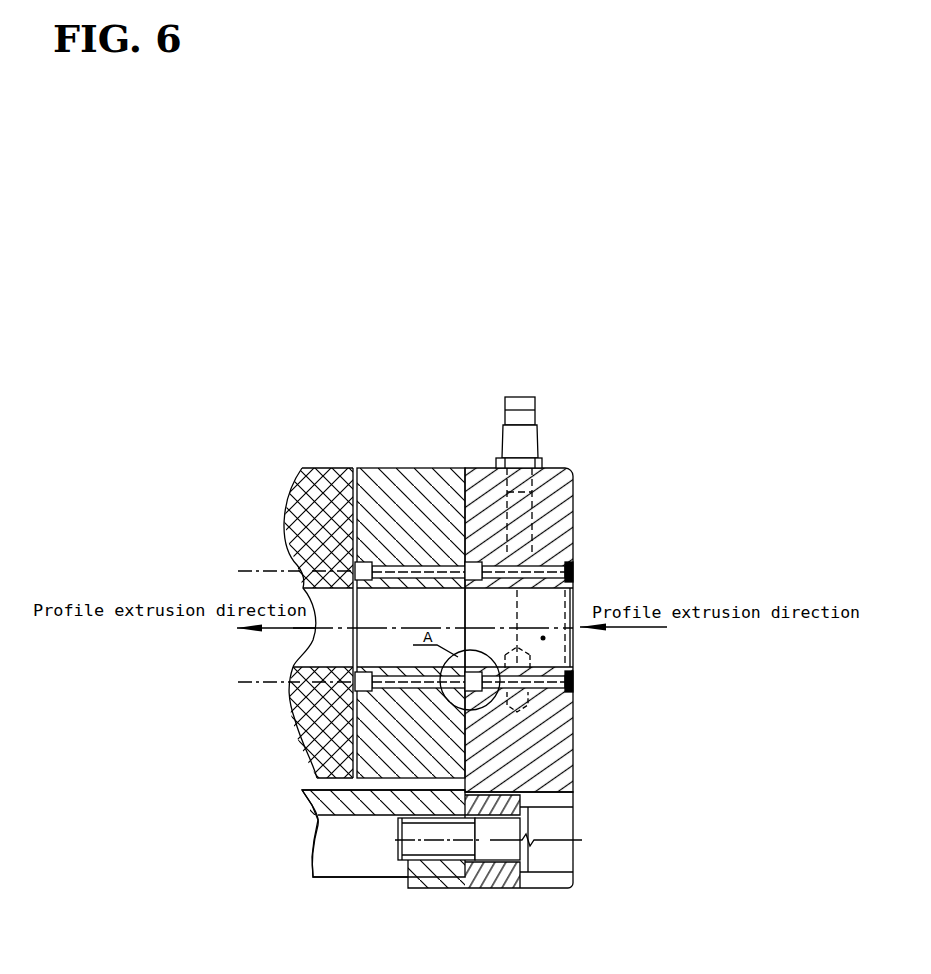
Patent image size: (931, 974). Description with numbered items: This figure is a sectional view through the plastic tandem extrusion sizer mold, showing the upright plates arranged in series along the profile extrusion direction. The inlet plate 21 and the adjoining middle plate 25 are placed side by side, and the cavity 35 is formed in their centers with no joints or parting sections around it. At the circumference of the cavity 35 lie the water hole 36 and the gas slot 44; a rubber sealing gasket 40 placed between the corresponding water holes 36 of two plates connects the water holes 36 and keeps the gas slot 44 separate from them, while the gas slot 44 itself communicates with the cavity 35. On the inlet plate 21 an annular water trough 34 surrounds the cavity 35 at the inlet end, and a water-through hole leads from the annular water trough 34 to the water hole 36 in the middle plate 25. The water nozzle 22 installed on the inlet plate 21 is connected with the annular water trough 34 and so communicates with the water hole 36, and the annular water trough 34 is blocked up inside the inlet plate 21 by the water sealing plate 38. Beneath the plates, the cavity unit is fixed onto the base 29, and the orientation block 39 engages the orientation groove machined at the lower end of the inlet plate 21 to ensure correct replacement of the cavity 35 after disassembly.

The gas slot 44 is at (353, 605).
The sealing gasket 40 is at (350, 578).
The water hole 36 is at (398, 560).
The middle plate 25 is at (417, 540).
The water nozzle 22 is at (515, 447).
The inlet plate 21 is at (533, 425).
The annular water trough 34 is at (573, 502).
The water sealing plate 38 is at (573, 572).
The base 29 is at (410, 848).
The orientation block 39 is at (518, 880).
The cavity 35 is at (572, 690).